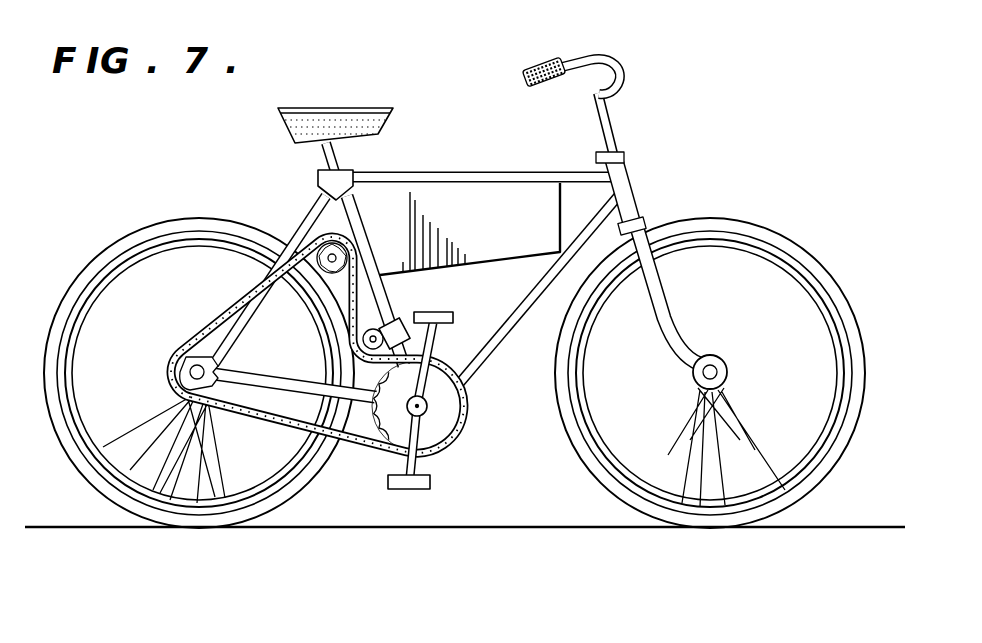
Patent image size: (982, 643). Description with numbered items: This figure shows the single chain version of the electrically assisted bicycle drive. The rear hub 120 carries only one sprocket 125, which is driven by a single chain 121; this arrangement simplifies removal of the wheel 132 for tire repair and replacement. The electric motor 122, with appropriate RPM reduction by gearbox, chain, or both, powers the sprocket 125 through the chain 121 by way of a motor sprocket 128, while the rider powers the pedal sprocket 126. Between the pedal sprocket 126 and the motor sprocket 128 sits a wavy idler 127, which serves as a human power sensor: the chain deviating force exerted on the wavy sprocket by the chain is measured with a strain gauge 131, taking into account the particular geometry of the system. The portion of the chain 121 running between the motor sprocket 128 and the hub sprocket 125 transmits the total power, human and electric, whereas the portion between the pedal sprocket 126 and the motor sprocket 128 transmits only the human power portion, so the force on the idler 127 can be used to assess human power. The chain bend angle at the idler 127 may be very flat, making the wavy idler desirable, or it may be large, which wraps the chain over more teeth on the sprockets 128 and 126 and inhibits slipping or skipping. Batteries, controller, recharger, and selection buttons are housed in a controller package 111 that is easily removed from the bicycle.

The controller package 111 is at (470, 229).
The rear hub 120 is at (162, 343).
The chain 121 is at (262, 432).
The electric motor 122 is at (316, 214).
The sprocket 125 is at (187, 372).
The pedal sprocket 126 is at (437, 426).
The wavy idler 127 is at (398, 318).
The motor sprocket 128 is at (327, 267).
The strain gauge 131 is at (352, 346).
The wheel 132 is at (115, 500).